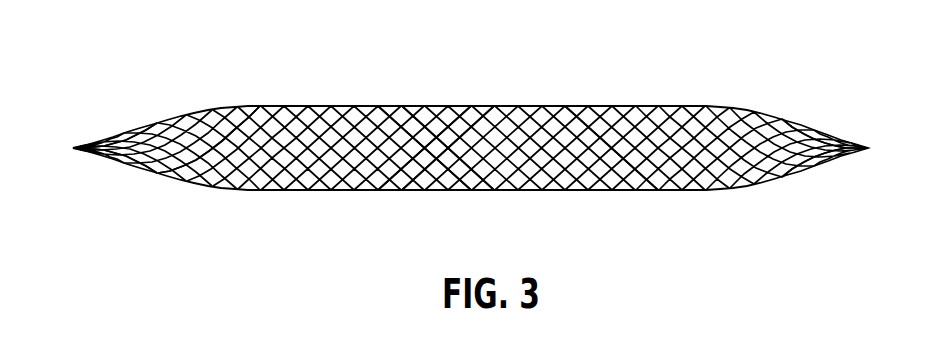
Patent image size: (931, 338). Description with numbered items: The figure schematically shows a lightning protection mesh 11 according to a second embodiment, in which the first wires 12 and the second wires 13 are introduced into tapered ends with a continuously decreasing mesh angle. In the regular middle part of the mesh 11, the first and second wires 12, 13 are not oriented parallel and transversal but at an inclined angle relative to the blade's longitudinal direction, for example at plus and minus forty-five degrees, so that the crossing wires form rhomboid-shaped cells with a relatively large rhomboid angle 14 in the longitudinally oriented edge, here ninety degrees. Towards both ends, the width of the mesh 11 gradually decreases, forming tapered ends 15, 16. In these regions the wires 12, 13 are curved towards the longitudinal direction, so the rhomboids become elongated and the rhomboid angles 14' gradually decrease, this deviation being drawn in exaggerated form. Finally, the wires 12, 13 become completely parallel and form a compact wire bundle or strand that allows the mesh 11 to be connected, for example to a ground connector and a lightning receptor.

The lightning protection mesh 11 is at (498, 100).
The first wires 12 is at (415, 168).
The second wires 13 is at (427, 106).
The rhomboid angle 14 is at (611, 178).
The rhomboid angle in tapered end 14' is at (209, 180).
The tapered end 15 is at (132, 172).
The tapered end 16 is at (807, 123).